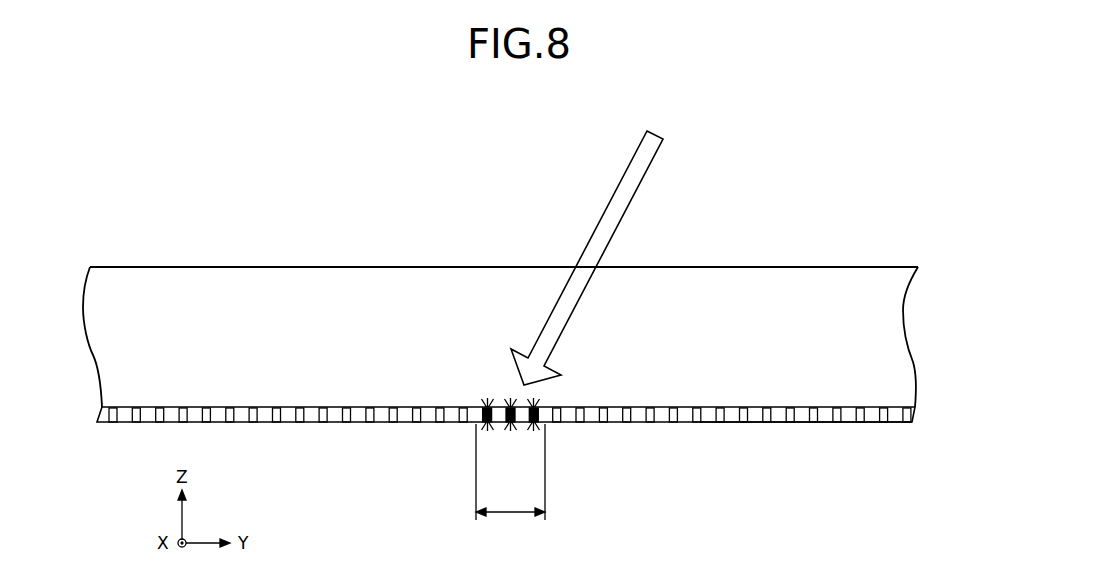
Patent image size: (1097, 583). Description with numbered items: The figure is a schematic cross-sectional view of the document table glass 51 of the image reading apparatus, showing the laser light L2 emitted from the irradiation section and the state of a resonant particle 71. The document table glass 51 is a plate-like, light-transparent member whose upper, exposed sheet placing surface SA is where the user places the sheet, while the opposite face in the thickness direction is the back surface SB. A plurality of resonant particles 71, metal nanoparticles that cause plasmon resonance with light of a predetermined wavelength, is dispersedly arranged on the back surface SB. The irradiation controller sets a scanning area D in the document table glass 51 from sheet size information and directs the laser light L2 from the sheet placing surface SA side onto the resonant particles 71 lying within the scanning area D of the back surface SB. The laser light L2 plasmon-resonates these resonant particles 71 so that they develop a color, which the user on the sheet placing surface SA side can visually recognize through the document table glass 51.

The document table glass 51 is at (748, 288).
The resonant particle 71 is at (835, 422).
The laser light L2 is at (607, 198).
The sheet placing surface SA is at (855, 265).
The back surface SB is at (895, 422).
The scanning area D is at (510, 472).